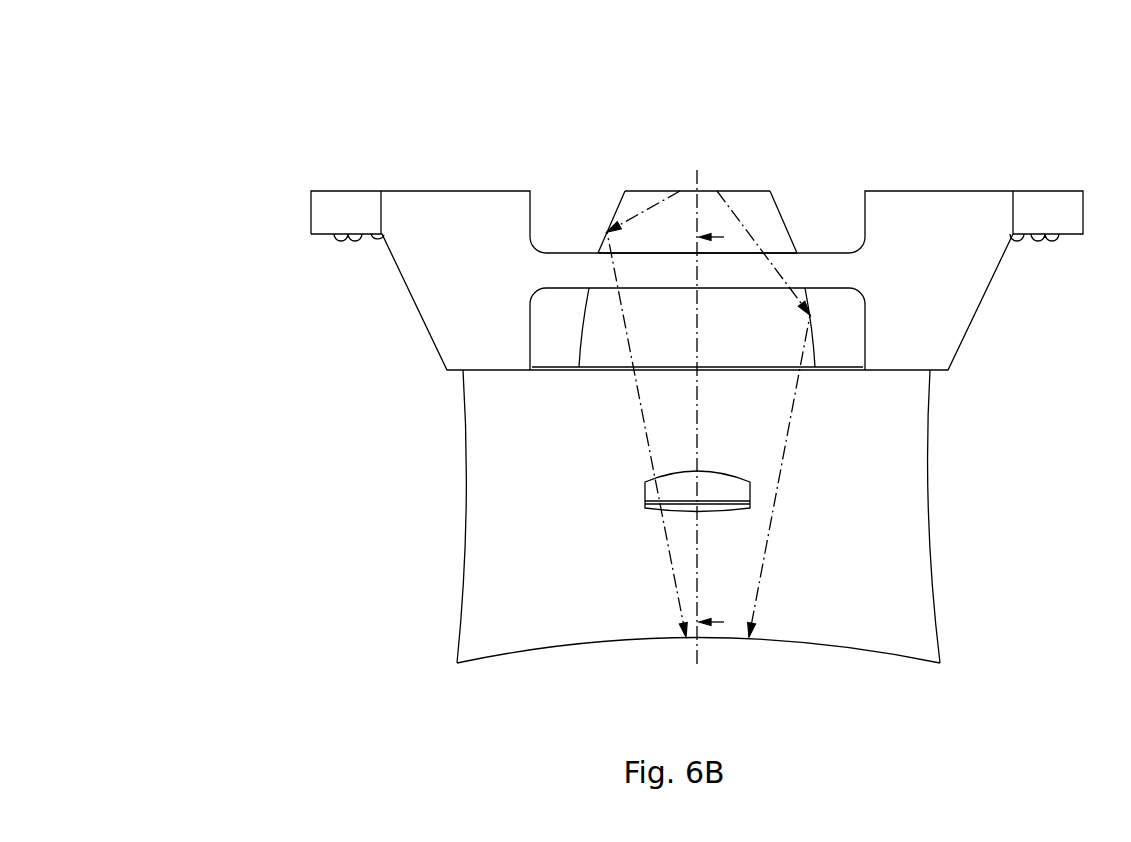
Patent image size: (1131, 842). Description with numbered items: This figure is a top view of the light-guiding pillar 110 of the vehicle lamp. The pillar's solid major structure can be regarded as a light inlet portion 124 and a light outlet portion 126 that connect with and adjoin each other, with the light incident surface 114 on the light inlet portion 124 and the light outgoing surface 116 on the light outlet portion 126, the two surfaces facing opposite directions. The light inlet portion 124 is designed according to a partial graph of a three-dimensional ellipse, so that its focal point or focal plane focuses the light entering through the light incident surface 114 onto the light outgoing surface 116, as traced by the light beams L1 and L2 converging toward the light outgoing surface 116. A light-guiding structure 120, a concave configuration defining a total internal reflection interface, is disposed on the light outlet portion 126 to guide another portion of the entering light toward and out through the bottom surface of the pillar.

The light-guiding pillar 110 is at (219, 40).
The light incident surface 114 is at (650, 180).
The light outgoing surface 116 is at (513, 660).
The light-guiding structure 120 is at (645, 493).
The light inlet portion 124 is at (783, 215).
The light outlet portion 126 is at (908, 558).
The light beam L1 is at (665, 546).
The light beam L2 is at (762, 569).